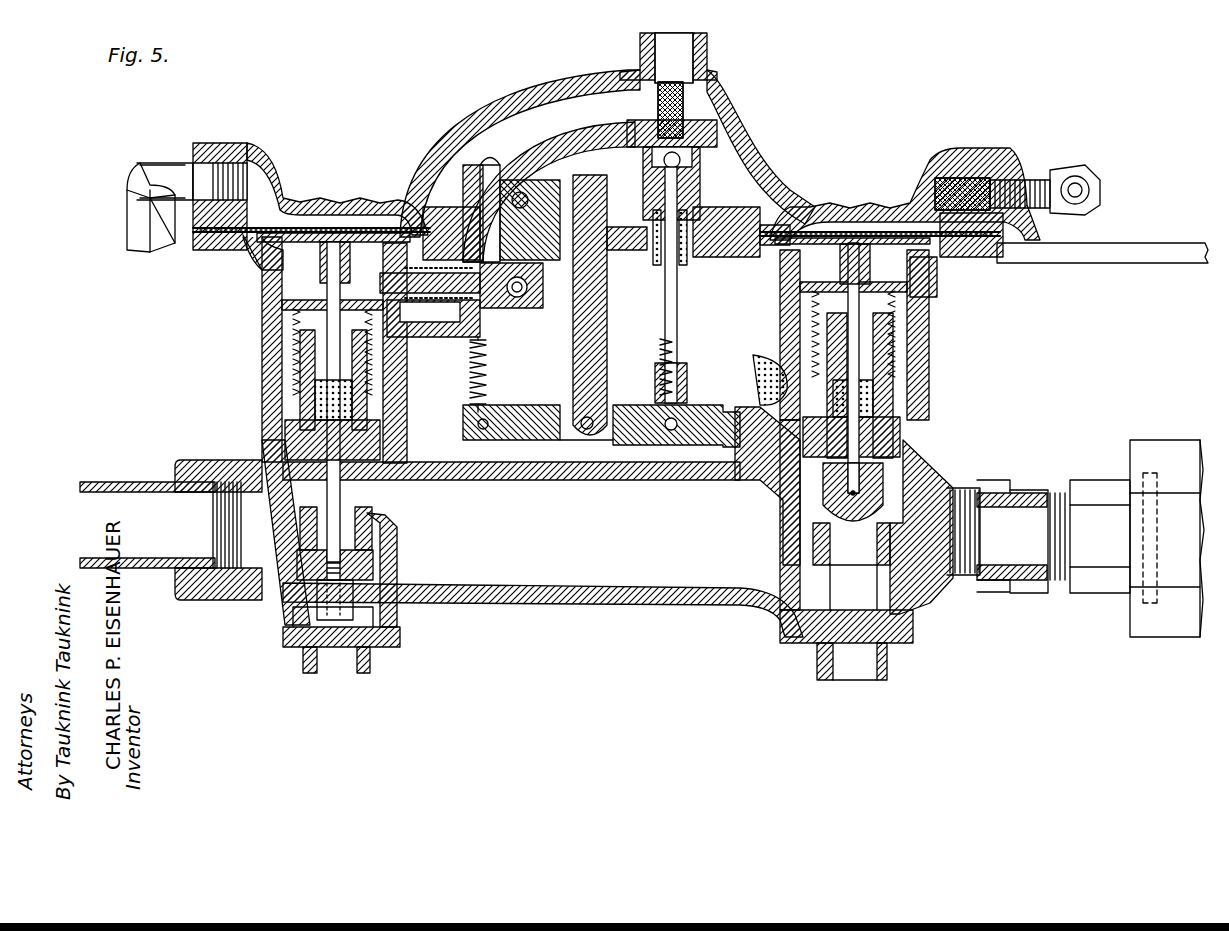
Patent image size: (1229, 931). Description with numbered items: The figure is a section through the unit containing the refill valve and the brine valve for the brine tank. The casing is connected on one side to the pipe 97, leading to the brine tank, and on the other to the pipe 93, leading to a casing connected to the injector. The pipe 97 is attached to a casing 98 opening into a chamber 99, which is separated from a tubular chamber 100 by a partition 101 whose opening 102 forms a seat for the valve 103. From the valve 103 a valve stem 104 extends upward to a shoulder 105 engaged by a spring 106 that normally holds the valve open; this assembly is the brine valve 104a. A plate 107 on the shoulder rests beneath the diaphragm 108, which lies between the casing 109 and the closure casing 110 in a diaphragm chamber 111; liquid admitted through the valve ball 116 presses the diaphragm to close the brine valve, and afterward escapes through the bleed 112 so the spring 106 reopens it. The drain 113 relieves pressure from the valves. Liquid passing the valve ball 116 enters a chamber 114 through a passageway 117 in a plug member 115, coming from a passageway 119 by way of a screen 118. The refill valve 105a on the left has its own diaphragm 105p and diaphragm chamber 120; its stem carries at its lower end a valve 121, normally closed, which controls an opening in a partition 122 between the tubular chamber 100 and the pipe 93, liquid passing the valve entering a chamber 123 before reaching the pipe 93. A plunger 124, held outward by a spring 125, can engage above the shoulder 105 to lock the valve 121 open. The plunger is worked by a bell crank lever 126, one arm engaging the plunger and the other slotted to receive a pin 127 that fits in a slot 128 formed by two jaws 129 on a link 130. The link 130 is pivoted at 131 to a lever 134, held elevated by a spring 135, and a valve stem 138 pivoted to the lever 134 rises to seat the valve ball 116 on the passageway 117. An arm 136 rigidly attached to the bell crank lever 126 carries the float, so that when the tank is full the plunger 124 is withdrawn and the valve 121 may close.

The pipe 93 is at (133, 480).
The pipe 97 is at (1052, 492).
The casing 98 is at (990, 483).
The chamber 99 is at (950, 485).
The tubular chamber 100 is at (757, 578).
The partition 101 is at (912, 555).
The opening 102 is at (840, 548).
The valve 103 is at (925, 462).
The valve stem 104 is at (900, 430).
The brine valve 104a is at (880, 205).
The shoulder 105 is at (282, 303).
The diaphragm 105p is at (262, 255).
The refill valve 105a is at (330, 195).
The spring 106 is at (895, 310).
The plate 107 is at (940, 270).
The diaphragm 108 is at (868, 232).
The casing 109 is at (752, 462).
The closure casing 110 is at (810, 205).
The diaphragm chamber 111 is at (845, 225).
The bleed 112 is at (1018, 175).
The drain 113 is at (1082, 178).
The chamber 114 is at (780, 180).
The plug member 115 is at (683, 135).
The valve ball 116 is at (680, 178).
The passageway 117 is at (682, 160).
The screen 118 is at (666, 40).
The passageway 119 is at (548, 100).
The diaphragm chamber 120 is at (404, 200).
The valve 121 is at (318, 580).
The partition 122 is at (397, 548).
The chamber 123 is at (262, 575).
The plunger 124 is at (475, 336).
The spring 125 is at (445, 260).
The bell crank lever 126 is at (482, 178).
The pin 127 is at (565, 190).
The slot 128 is at (530, 180).
The jaws 129 is at (490, 170).
The link 130 is at (607, 365).
The pivot 131 is at (607, 410).
The lever 134 is at (545, 408).
The spring 135 is at (470, 402).
The arm 136 is at (1150, 234).
The valve stem 138 is at (680, 350).